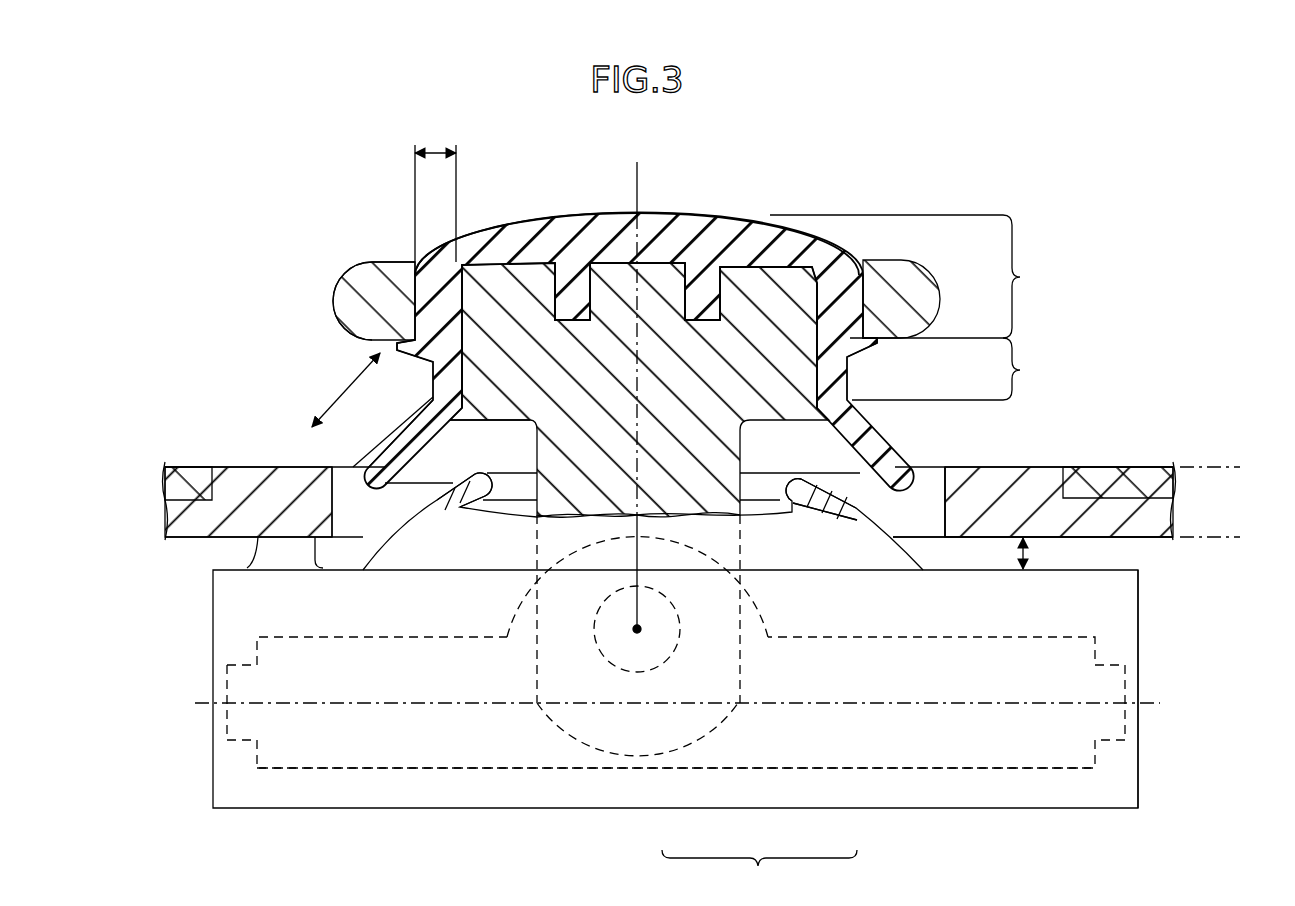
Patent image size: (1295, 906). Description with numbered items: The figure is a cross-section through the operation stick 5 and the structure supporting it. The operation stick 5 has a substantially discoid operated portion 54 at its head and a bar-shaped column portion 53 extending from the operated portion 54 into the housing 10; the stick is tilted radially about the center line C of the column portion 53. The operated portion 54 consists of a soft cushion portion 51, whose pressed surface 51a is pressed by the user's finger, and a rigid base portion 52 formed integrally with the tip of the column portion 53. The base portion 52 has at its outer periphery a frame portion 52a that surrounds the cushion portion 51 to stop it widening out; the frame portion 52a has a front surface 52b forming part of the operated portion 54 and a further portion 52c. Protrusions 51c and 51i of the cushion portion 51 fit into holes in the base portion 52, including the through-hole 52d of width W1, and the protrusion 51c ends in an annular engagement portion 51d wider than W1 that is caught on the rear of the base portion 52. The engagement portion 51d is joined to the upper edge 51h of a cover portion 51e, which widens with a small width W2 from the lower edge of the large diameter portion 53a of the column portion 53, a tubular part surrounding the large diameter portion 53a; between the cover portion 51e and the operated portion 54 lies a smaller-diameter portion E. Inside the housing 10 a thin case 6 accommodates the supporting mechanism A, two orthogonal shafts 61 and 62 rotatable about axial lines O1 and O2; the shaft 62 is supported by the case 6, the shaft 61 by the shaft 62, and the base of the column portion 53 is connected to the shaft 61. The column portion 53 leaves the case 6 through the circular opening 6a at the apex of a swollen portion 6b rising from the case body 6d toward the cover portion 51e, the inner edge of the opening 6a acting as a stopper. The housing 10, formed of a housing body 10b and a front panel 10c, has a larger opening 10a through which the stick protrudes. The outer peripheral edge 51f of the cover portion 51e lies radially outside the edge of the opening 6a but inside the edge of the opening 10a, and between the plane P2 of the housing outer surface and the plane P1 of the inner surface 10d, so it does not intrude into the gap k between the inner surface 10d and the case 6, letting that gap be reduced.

The operation stick 5 is at (654, 377).
The cushion portion 51 is at (677, 222).
The pressed surface 51a is at (521, 222).
The protrusion 51c is at (458, 287).
The engagement portion 51d is at (857, 345).
The cover portion 51e is at (412, 436).
The outer peripheral edge 51f is at (567, 285).
The inner peripheral edge 51h is at (450, 421).
The protrusion 51i is at (587, 294).
The base portion 52 is at (813, 303).
The frame portion 52a is at (365, 283).
The front surface 52b is at (403, 262).
The lower surface of seal ring 52c is at (360, 290).
The through-hole 52d is at (413, 313).
The column portion 53 is at (738, 488).
The large diameter portion 53a is at (807, 382).
The operated portion 54 is at (910, 276).
The case 6 is at (700, 671).
The opening 6a is at (487, 478).
The swollen portion 6b is at (880, 530).
The main body 6d is at (1140, 646).
The shaft 61 is at (640, 672).
The shaft 62 is at (838, 768).
The housing 10 is at (720, 486).
The opening 10a is at (946, 495).
The housing body 10b is at (1043, 470).
The front panel 10c is at (1142, 472).
The inner surface 10d is at (1130, 540).
The width W1 is at (435, 200).
The width W2 is at (372, 410).
The center line C is at (636, 384).
The portion E is at (946, 369).
The gap k is at (1034, 553).
The plane P1 is at (1228, 537).
The plane P2 is at (1228, 467).
The axial line O1 is at (641, 631).
The axial line O2 is at (698, 703).
The supporting mechanism A is at (759, 874).